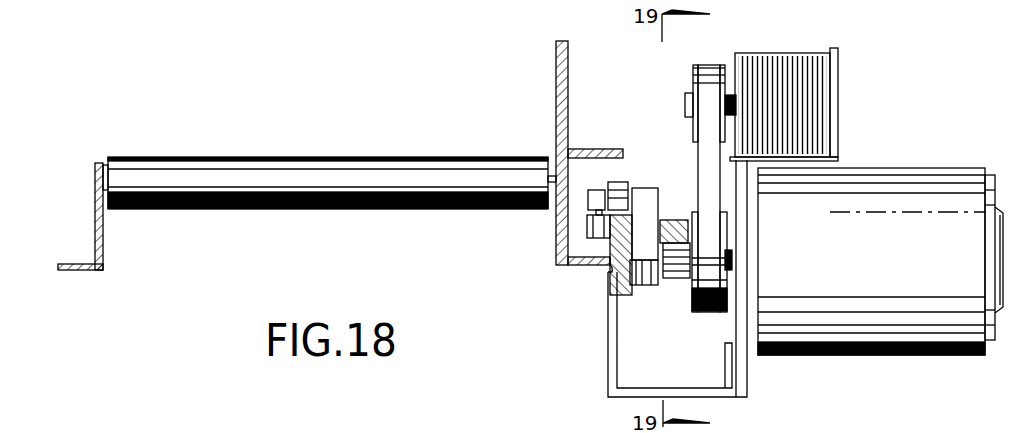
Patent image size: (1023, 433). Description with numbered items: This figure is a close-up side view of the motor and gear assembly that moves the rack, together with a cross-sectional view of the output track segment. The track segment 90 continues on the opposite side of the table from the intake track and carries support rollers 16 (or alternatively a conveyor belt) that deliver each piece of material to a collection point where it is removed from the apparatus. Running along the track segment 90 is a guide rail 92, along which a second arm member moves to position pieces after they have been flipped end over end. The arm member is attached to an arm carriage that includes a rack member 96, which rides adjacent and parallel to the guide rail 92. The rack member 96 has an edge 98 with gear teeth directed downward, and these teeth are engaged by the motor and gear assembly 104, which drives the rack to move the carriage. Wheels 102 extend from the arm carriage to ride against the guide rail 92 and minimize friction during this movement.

The support rollers 16 is at (318, 157).
The track segment 90 is at (103, 258).
The guide rail 92 is at (569, 100).
The rack member 96 is at (668, 220).
The edge 98 is at (688, 240).
The wheels 102 is at (622, 183).
The motor and gear assembly 104 is at (890, 140).